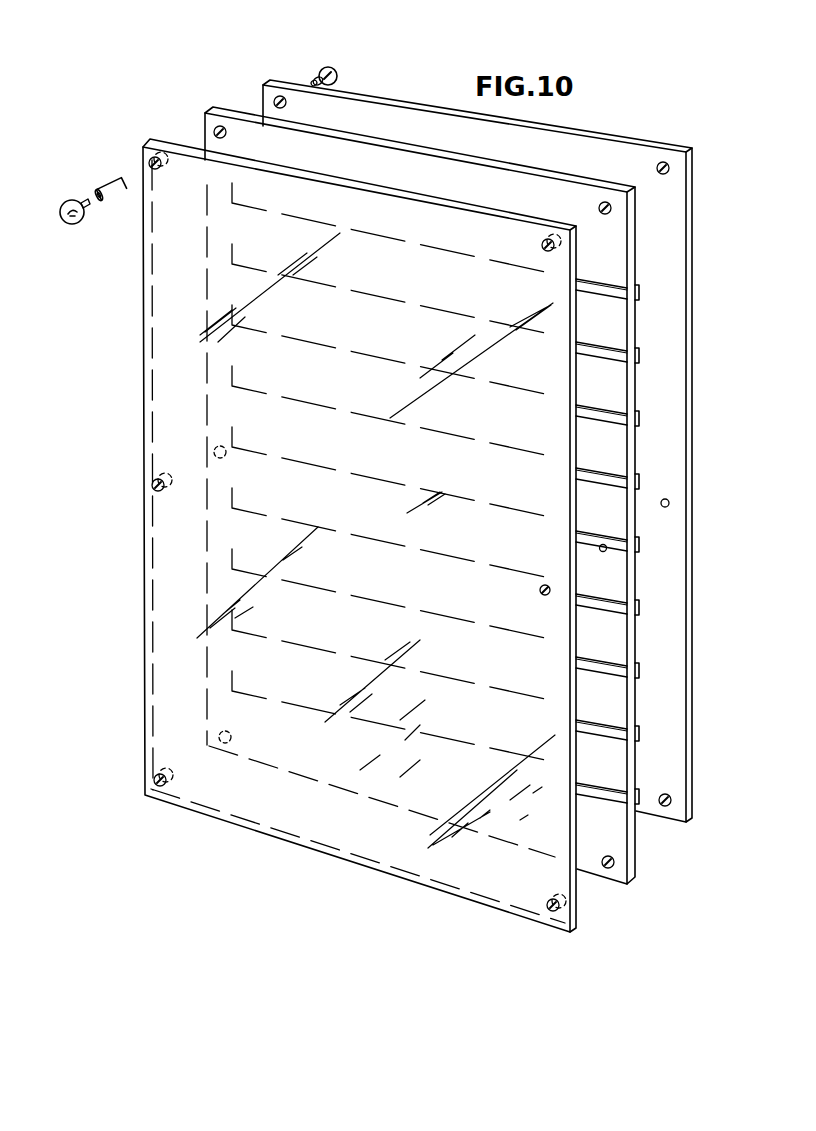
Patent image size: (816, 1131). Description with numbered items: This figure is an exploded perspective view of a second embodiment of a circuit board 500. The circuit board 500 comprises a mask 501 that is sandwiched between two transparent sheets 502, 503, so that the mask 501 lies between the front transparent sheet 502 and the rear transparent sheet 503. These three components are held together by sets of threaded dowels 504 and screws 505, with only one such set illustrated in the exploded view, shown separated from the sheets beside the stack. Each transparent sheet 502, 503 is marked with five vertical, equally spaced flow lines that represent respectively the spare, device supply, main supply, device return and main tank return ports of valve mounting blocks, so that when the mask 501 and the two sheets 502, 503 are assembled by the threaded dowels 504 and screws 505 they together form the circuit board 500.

The circuit board 500 is at (137, 420).
The mask 501 is at (632, 868).
The transparent sheet 502 is at (546, 918).
The transparent sheet 503 is at (684, 817).
The threaded dowel 504 is at (101, 180).
The screw 505 is at (72, 226).